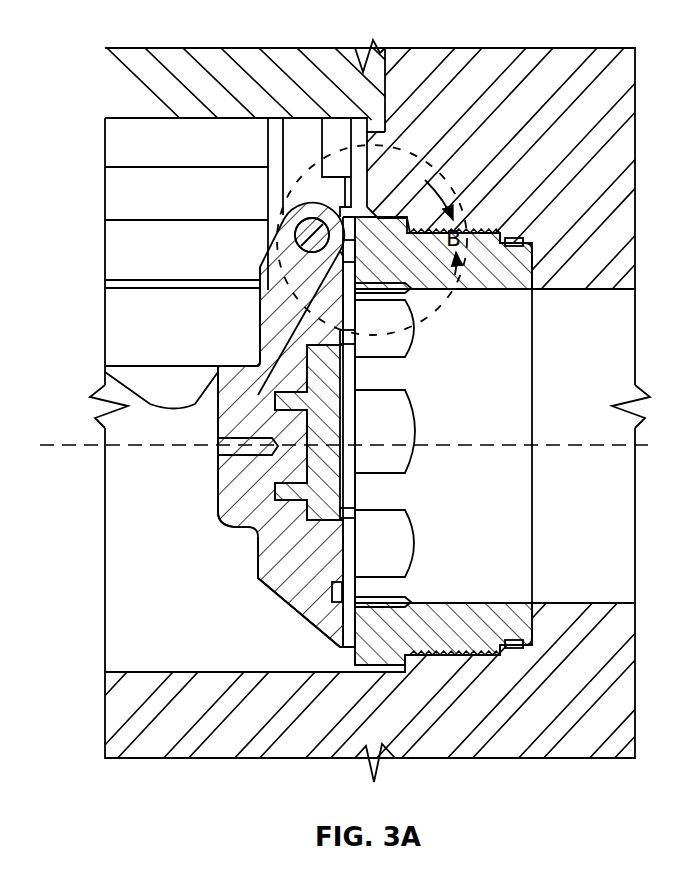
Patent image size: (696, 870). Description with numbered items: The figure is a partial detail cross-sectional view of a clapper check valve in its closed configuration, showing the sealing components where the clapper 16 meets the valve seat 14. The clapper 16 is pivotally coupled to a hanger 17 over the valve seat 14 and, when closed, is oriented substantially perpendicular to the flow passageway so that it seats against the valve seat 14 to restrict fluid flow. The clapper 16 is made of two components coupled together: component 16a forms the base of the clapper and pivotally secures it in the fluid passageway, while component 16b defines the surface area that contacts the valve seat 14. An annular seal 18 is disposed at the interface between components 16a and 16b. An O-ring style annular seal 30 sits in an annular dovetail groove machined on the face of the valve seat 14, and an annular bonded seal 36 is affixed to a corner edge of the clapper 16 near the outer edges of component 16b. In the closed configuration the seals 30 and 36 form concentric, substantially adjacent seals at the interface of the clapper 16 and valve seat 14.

The valve seat 14 is at (536, 352).
The clapper 16 is at (258, 322).
The clapper base component 16a is at (216, 505).
The clapper seat-contacting component 16b is at (322, 527).
The hanger 17 is at (293, 205).
The annular seal 18 is at (330, 592).
The annular seal 30 is at (362, 262).
The annular bonded seal 36 is at (338, 218).